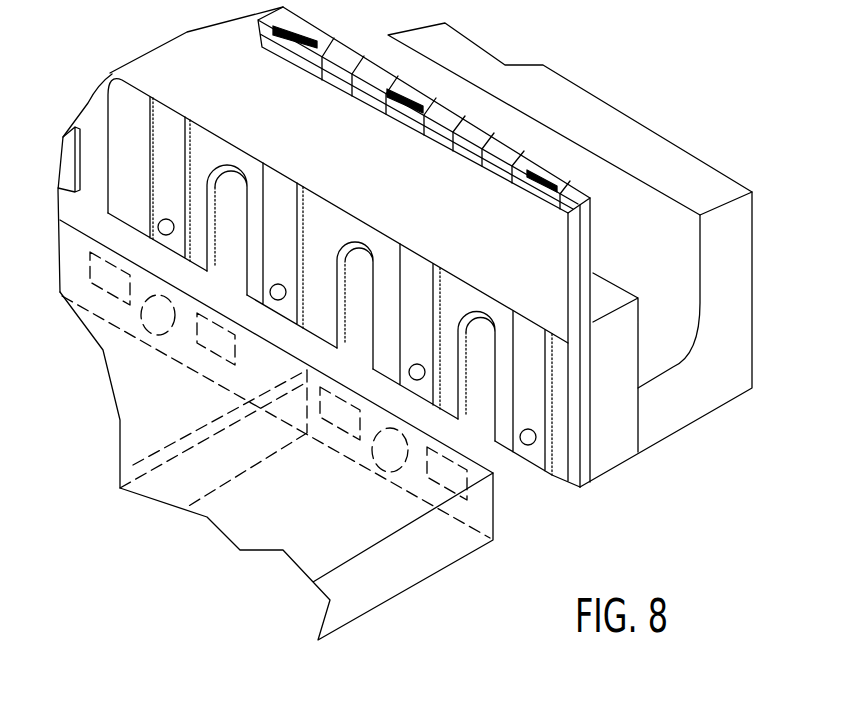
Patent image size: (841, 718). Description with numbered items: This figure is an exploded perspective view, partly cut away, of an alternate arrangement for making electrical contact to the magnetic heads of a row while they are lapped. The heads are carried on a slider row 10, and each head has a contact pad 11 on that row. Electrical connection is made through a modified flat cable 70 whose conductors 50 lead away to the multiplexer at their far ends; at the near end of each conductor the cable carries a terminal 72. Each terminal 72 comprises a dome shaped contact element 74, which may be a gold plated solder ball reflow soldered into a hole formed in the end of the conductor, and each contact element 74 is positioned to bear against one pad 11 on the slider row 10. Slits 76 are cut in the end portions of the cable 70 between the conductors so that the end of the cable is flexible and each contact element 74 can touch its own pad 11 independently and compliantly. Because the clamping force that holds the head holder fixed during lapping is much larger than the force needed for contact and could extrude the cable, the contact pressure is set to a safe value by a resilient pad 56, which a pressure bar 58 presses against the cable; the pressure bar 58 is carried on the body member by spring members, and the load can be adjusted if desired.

The slider row 10 is at (430, 557).
The contact pad 11 is at (455, 478).
The conductor 50 is at (410, 91).
The resilient pad 56 is at (610, 448).
The pressure bar 58 is at (678, 403).
The modified flat cable 70 is at (362, 162).
The terminal 72 is at (533, 418).
The dome shaped contact element 74 is at (417, 381).
The slit 76 is at (242, 277).